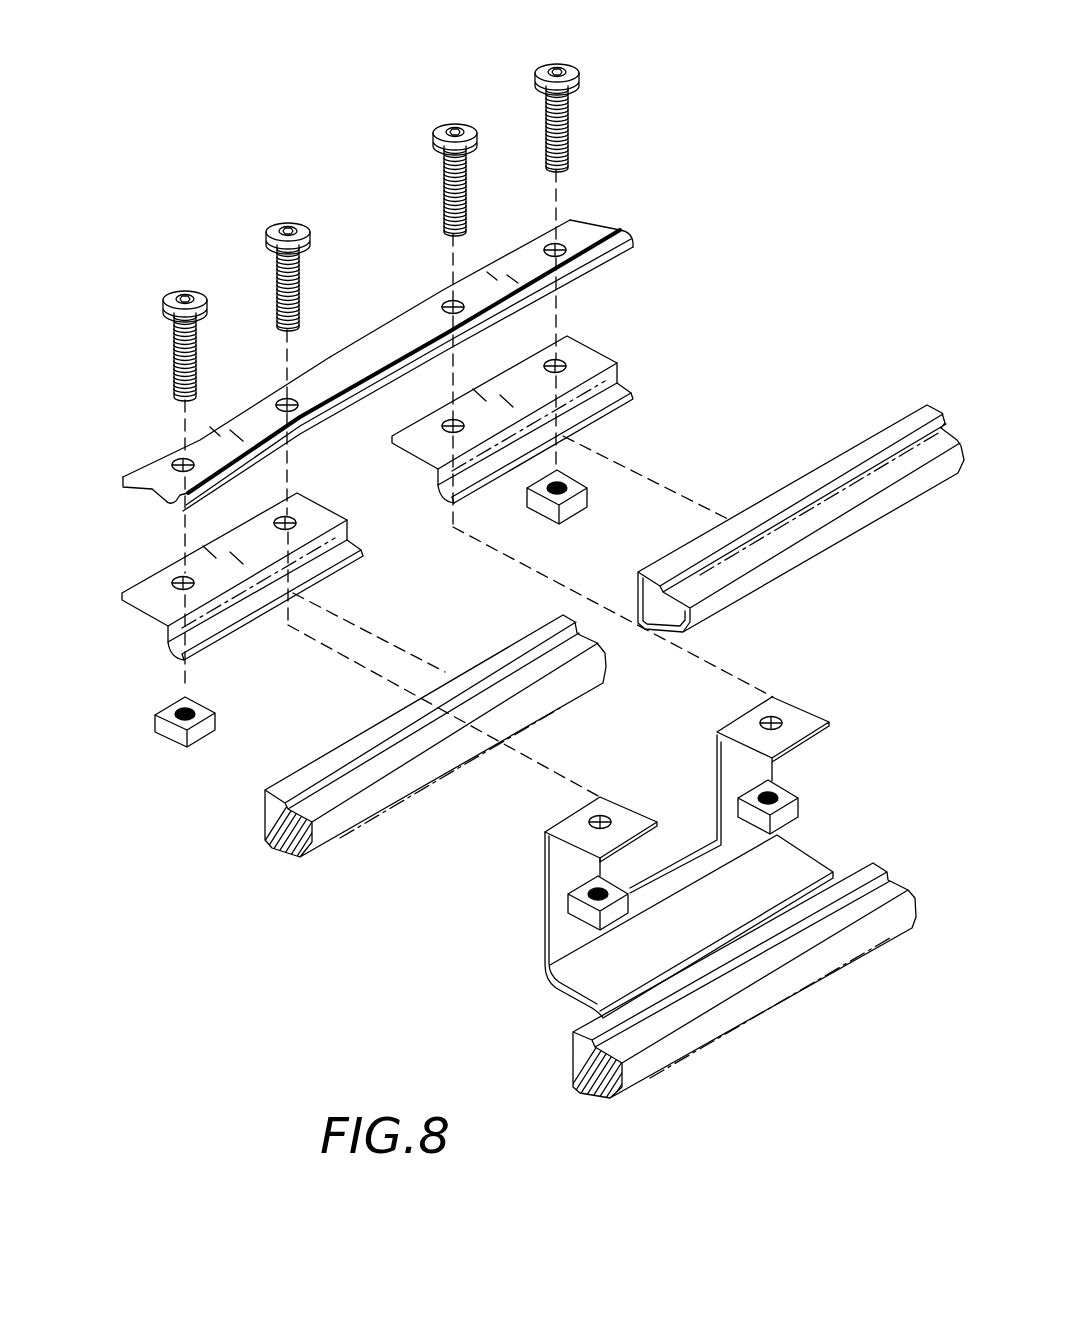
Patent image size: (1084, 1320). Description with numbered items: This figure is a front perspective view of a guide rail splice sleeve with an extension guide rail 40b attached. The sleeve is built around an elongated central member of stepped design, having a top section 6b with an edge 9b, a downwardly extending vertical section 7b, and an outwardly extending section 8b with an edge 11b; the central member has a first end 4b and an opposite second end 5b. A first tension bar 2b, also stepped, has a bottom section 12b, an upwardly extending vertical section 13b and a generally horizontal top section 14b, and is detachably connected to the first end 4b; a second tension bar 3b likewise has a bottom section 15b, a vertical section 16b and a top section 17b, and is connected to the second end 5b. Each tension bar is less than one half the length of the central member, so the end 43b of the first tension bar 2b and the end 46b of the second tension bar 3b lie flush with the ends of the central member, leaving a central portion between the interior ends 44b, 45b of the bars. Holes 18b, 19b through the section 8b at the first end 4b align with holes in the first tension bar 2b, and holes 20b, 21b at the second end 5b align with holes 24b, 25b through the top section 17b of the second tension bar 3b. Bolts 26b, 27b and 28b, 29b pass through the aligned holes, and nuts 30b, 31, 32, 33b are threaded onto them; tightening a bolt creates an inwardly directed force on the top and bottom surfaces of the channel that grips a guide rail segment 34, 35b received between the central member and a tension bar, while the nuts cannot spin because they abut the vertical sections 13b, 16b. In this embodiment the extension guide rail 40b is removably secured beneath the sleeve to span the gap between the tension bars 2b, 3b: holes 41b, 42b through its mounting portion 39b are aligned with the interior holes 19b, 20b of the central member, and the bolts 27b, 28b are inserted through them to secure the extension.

The first tension bar 2b is at (134, 583).
The second tension bar 3b is at (516, 395).
The first end 4b is at (268, 403).
The second end 5b is at (526, 246).
The top section 6b is at (263, 455).
The vertical section 7b is at (168, 506).
The outwardly extending section 8b is at (130, 470).
The edge 9b is at (616, 250).
The edge 11b is at (573, 232).
The bottom section 12b is at (358, 560).
The vertical section 13b is at (352, 538).
The top section 14b is at (305, 522).
The bottom section 15b is at (541, 457).
The vertical section 16b is at (500, 448).
The top section 17b is at (395, 465).
The hole 18b is at (182, 458).
The hole 19b is at (290, 398).
The hole 20b is at (450, 300).
The hole 21b is at (553, 243).
The hole 24b is at (424, 407).
The hole 25b is at (529, 348).
The bolt 26b is at (168, 297).
The bolt 27b is at (273, 230).
The bolt 28b is at (443, 130).
The bolt 29b is at (546, 68).
The nut 30b is at (200, 730).
The nut 31 is at (615, 898).
The nut 32 is at (797, 800).
The nut 33b is at (575, 515).
The guide rail segment 34 is at (452, 762).
The guide rail segment 35b is at (835, 538).
The mounting portion 39b is at (633, 810).
The extension guide rail 40b is at (562, 920).
The hole 41b is at (603, 816).
The hole 42b is at (775, 718).
The end 43b is at (148, 600).
The interior end 44b is at (300, 500).
The interior end 45b is at (489, 424).
The end 46b is at (550, 351).